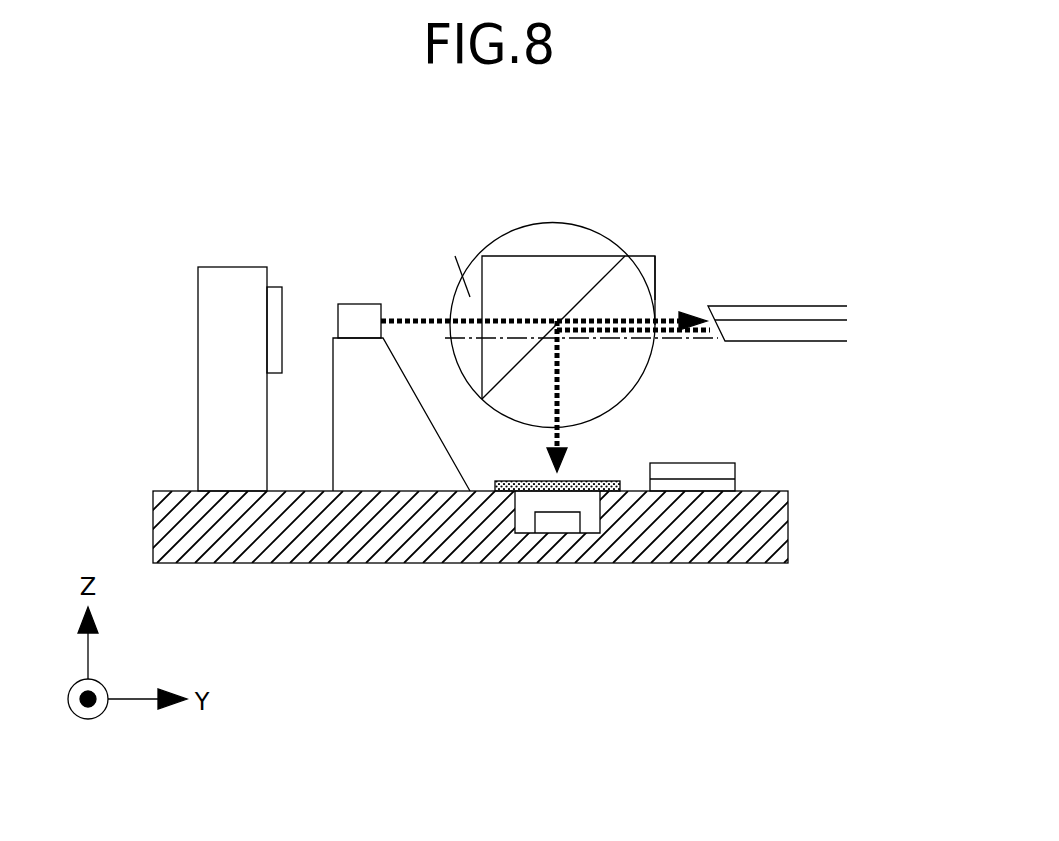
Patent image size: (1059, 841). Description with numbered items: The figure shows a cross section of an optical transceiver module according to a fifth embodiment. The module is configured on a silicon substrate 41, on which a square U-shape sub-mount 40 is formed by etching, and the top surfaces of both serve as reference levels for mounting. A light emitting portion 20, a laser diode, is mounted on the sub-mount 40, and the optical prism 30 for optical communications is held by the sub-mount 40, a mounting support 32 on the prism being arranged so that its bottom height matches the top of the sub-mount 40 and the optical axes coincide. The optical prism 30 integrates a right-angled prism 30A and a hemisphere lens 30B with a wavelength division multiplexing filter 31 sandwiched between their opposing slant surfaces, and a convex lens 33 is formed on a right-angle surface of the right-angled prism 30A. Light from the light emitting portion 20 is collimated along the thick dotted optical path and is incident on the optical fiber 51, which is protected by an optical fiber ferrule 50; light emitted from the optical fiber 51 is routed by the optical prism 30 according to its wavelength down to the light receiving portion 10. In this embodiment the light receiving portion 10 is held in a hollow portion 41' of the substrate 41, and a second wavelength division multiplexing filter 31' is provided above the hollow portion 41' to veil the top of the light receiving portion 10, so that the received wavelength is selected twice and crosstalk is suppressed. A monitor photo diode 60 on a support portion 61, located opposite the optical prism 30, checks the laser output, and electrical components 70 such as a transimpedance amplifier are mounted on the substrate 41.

The light receiving portion 10 is at (557, 527).
The light emitting portion 20 is at (360, 312).
The optical prism for optical communications 30 is at (579, 291).
The right-angled prism 30A is at (550, 270).
The hemisphere lens 30B is at (607, 373).
The wavelength division multiplexing filter 31 is at (545, 222).
The wavelength division multiplexing filter 31' is at (572, 406).
The mounting support 32 is at (644, 263).
The convex lens 33 is at (470, 297).
The square U-shape sub-mount 40 is at (396, 473).
The substrate 41 is at (468, 550).
The hollow portion 41' is at (557, 574).
The optical fiber ferrule 50 is at (780, 306).
The optical fiber 51 is at (813, 320).
The monitor photo diode 60 is at (275, 288).
The support portion 61 is at (235, 277).
The electrical components 70 is at (693, 472).